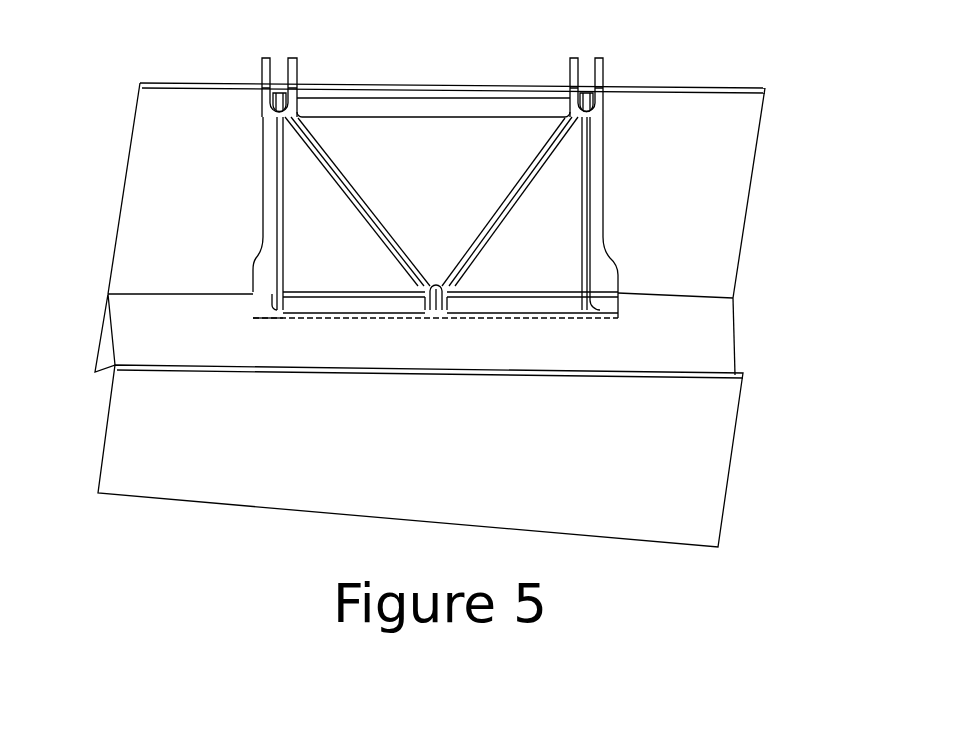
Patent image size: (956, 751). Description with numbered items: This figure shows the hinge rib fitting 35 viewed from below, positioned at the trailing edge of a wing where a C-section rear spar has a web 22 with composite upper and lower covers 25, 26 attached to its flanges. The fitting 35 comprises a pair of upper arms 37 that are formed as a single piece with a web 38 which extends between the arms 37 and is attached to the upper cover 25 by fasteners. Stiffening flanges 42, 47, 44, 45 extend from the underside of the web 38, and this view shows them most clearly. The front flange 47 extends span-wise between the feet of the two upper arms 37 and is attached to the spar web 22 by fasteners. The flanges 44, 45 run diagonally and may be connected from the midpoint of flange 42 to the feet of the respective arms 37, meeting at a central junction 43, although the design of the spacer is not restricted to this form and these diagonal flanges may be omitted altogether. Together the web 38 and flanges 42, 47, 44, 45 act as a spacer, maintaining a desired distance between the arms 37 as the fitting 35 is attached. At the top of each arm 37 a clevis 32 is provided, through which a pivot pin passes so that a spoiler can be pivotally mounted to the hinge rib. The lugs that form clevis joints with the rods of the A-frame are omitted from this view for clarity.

The web 22 is at (713, 344).
The upper cover 25 is at (708, 148).
The lower cover 26 is at (233, 458).
The clevis 32 is at (602, 80).
The fitting 35 is at (467, 72).
The upper arms 37 is at (282, 192).
The web 38 is at (553, 258).
The stiffening flange 42 is at (410, 112).
The vertex block 43 is at (440, 312).
The stiffening flange 44 is at (340, 183).
The stiffening flange 45 is at (507, 212).
The front flange 47 is at (365, 303).